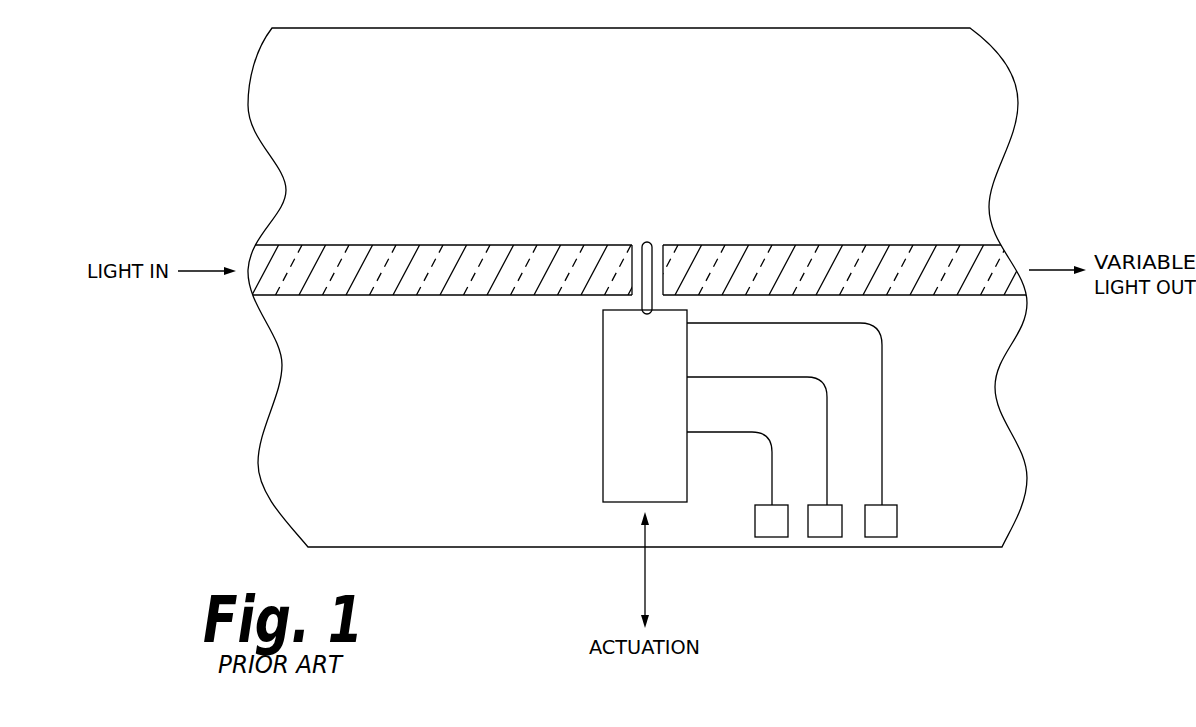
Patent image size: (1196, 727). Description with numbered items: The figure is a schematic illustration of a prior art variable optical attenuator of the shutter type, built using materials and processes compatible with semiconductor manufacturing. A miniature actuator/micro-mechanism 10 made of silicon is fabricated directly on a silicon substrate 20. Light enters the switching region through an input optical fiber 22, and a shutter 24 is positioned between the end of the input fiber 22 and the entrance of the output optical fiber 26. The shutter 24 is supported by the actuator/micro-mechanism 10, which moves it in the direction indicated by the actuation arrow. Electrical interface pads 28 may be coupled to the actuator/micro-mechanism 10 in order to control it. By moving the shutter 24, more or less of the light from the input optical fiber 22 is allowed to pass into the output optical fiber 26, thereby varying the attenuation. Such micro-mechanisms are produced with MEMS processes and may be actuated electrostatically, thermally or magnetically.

The actuator/micro-mechanism 10 is at (603, 452).
The silicon substrate 20 is at (1017, 500).
The input optical fiber 22 is at (428, 246).
The shutter 24 is at (645, 243).
The output optical fiber 26 is at (871, 259).
The electrical interface pads 28 is at (773, 520).